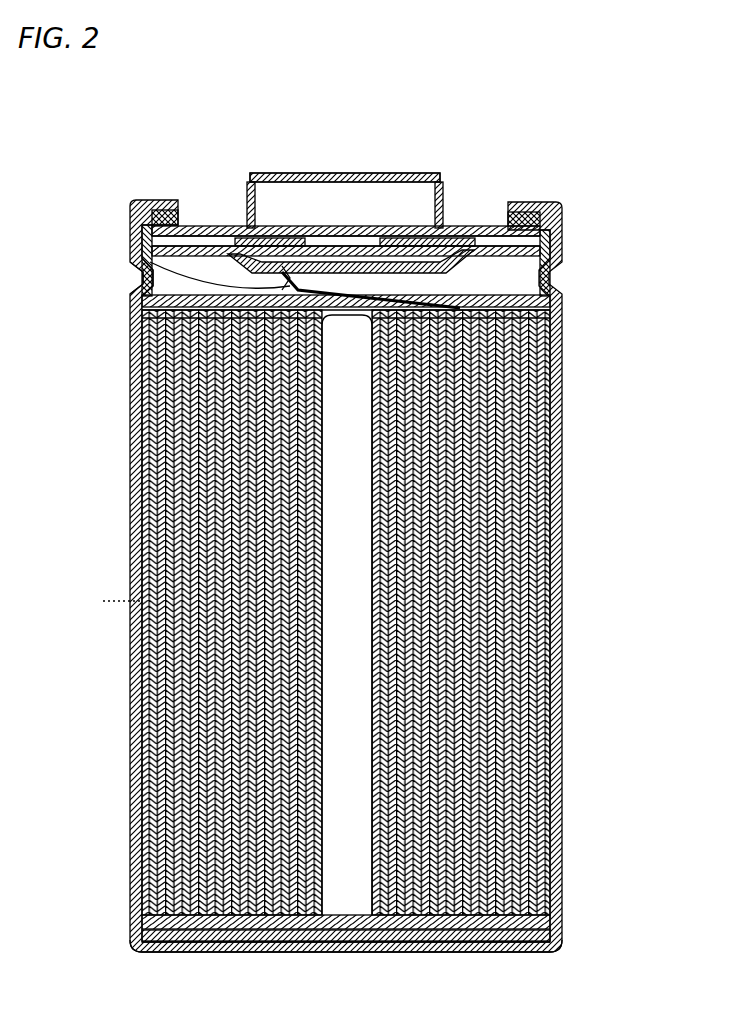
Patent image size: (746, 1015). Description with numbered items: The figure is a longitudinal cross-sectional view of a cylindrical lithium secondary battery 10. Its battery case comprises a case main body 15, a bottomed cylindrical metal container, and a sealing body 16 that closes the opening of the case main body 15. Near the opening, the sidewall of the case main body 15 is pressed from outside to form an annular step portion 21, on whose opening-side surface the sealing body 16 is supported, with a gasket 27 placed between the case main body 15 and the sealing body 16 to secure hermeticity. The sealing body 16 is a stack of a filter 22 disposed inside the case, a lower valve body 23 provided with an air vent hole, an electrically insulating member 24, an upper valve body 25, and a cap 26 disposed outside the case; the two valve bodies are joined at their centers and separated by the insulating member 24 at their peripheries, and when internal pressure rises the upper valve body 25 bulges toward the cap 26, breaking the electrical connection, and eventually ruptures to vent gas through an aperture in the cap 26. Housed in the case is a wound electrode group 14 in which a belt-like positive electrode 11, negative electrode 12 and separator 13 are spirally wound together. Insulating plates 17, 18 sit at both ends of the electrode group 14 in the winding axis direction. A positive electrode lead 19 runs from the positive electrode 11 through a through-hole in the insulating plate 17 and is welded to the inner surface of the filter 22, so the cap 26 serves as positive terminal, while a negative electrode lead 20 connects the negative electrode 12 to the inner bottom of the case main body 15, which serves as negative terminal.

The lithium secondary battery 10 is at (522, 104).
The positive electrode 11 is at (560, 682).
The negative electrode 12 is at (560, 716).
The separator 13 is at (640, 655).
The electrode group 14 is at (408, 619).
The case main body 15 is at (556, 205).
The sealing body 16 is at (441, 176).
The insulating plate 17 is at (562, 303).
The insulating plate 18 is at (556, 938).
The positive electrode lead 19 is at (142, 254).
The negative electrode lead 20 is at (140, 930).
The step portion 21 is at (131, 294).
The filter 22 is at (346, 254).
The lower valve body 23 is at (247, 228).
The insulating member 24 is at (214, 227).
The upper valve body 25 is at (288, 240).
The cap 26 is at (390, 174).
The gasket 27 is at (562, 222).